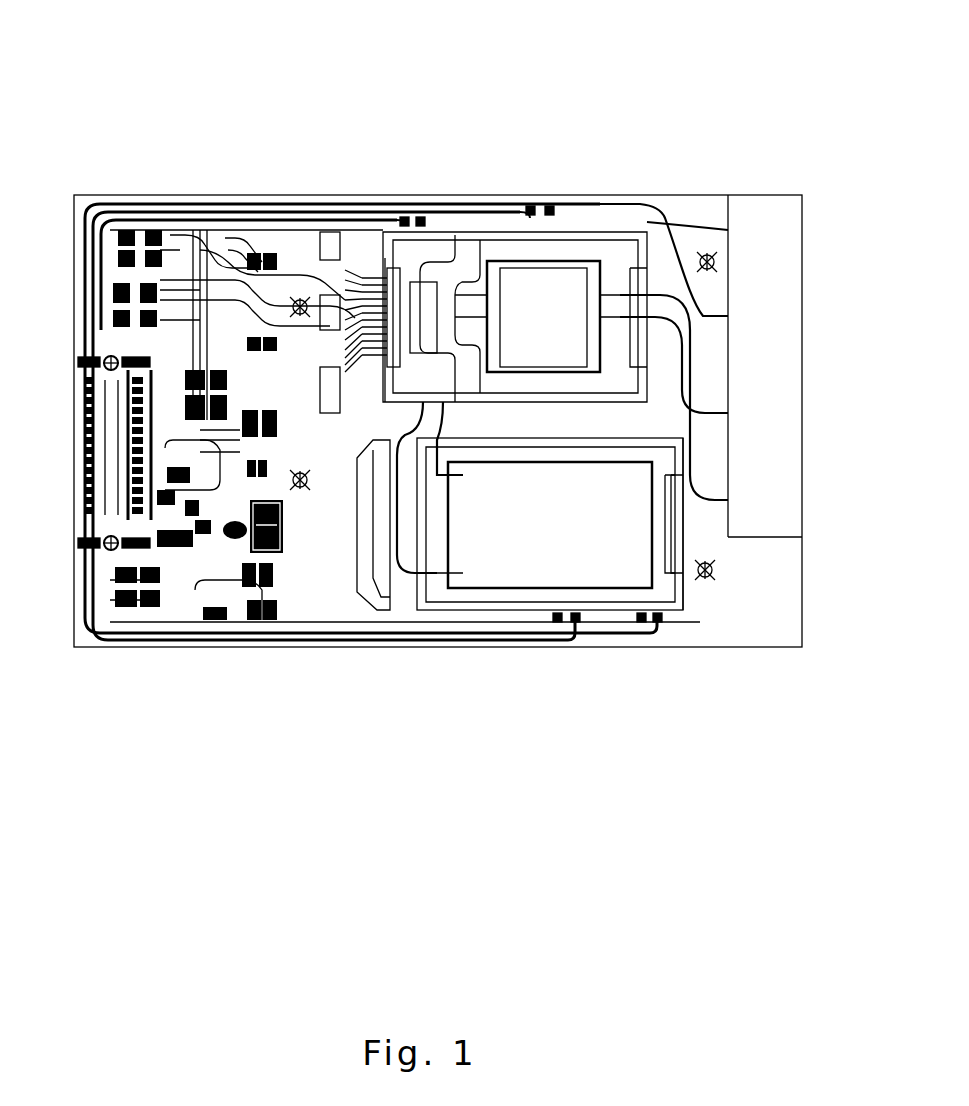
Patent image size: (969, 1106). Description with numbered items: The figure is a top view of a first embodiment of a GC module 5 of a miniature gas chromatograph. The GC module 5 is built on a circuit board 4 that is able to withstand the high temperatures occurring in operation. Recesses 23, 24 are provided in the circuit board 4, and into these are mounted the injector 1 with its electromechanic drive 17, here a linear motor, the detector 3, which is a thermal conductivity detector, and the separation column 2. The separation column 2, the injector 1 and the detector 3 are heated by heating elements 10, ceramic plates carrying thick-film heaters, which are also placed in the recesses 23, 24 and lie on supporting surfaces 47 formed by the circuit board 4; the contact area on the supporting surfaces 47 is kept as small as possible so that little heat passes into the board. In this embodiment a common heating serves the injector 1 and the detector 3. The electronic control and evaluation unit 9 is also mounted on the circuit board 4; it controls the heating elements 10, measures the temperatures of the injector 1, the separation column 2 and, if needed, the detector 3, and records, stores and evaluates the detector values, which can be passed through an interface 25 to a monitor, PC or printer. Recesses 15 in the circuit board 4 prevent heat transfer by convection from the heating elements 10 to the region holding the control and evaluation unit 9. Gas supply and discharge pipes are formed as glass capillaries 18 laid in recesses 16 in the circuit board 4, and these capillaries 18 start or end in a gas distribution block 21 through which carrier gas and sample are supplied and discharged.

The injector 1 is at (545, 285).
The separation column 2 is at (552, 517).
The detector 3 is at (422, 300).
The circuit board 4 is at (763, 603).
The GC module 5 is at (143, 128).
The electronic control and evaluation unit 9 is at (160, 635).
The heating elements 10 is at (480, 250).
The recesses 15 is at (327, 390).
The recesses 16 is at (667, 252).
The electromechanic drive 17 is at (597, 268).
The capillaries 18 is at (703, 315).
The gas distribution block 21 is at (765, 330).
The recess 23 is at (387, 238).
The recess 24 is at (680, 598).
The interface 25 is at (78, 530).
The supporting surfaces 47 is at (384, 258).